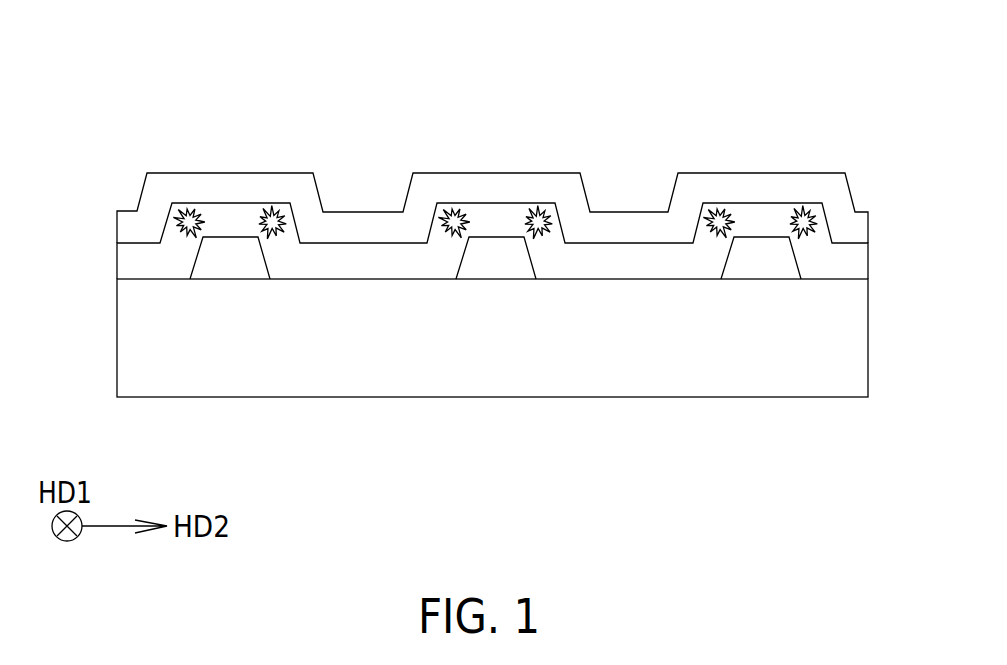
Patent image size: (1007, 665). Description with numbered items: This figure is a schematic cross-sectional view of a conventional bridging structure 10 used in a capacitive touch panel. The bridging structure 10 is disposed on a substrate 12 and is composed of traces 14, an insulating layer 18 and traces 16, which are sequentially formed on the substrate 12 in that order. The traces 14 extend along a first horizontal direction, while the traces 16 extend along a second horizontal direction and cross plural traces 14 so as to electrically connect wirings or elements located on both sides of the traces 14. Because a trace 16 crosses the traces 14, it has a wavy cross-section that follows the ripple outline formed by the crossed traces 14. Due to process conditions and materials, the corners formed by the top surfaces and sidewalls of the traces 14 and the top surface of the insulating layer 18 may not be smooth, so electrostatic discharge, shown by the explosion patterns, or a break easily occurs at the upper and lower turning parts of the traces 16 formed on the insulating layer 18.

The bridging structure 10 is at (808, 78).
The substrate 12 is at (838, 343).
The traces 14 is at (230, 260).
The traces 16 is at (837, 195).
The insulating layer 18 is at (838, 263).